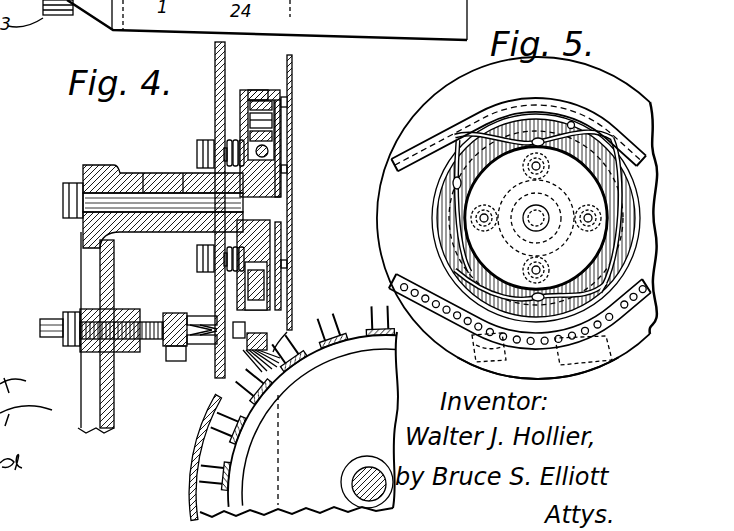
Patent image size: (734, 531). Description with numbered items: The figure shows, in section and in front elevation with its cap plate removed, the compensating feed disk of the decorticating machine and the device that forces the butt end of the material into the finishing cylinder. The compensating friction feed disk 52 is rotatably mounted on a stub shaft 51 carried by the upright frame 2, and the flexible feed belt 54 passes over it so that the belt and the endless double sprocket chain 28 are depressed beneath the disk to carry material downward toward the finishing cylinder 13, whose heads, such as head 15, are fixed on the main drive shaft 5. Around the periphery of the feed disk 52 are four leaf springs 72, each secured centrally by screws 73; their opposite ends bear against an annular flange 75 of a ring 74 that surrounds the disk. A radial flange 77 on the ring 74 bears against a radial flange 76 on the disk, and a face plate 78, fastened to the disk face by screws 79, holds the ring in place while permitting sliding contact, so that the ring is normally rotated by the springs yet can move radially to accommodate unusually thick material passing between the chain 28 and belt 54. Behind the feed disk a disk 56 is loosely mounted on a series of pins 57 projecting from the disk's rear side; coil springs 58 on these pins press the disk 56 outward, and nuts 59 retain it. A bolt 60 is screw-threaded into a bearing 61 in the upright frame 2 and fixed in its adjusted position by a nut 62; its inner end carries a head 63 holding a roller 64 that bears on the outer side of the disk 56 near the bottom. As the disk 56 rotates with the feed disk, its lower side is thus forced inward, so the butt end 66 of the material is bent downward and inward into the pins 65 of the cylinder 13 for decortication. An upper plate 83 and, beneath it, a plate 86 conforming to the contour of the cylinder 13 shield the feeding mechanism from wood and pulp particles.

In FIG. 4, the upright frame 2 is at (88, 262).
In FIG. 4, the main drive shaft 5 is at (370, 466).
In FIG. 4, the finishing cylinder 13 is at (328, 360).
In FIG. 4, the head 15 is at (332, 426).
In FIG. 4, the endless double sprocket chain 28 is at (287, 332).
In FIG. 5, the endless double sprocket chain 28 is at (503, 368).
In FIG. 4, the stub shaft 51 is at (250, 207).
In FIG. 5, the stub shaft 51 is at (539, 214).
In FIG. 4, the compensating friction feed disk 52 is at (275, 156).
In FIG. 5, the compensating friction feed disk 52 is at (536, 218).
In FIG. 4, the feed belt 54 is at (258, 90).
In FIG. 5, the feed belt 54 is at (433, 142).
In FIG. 4, the disk 56 is at (222, 72).
In FIG. 5, the disk 56 is at (517, 218).
In FIG. 4, the pins 57 is at (197, 152).
In FIG. 4, the coil springs 58 is at (232, 138).
In FIG. 4, the nuts 59 is at (207, 140).
In FIG. 4, the bolt 60 is at (60, 325).
In FIG. 4, the bearing 61 is at (148, 352).
In FIG. 4, the nut 62 is at (72, 346).
In FIG. 4, the head 63 is at (186, 361).
In FIG. 4, the roller 64 is at (190, 328).
In FIG. 5, the roller 64 is at (558, 359).
In FIG. 4, the pins 65 is at (328, 312).
In FIG. 4, the butt end 66 is at (240, 366).
In FIG. 4, the leaf springs 72 is at (283, 138).
In FIG. 5, the leaf springs 72 is at (457, 184).
In FIG. 4, the screws 73 is at (289, 267).
In FIG. 5, the screws 73 is at (541, 139).
In FIG. 4, the ring 74 is at (283, 102).
In FIG. 4, the annular flange 75 is at (292, 85).
In FIG. 5, the annular flange 75 is at (434, 218).
In FIG. 4, the radial flange 76 is at (273, 124).
In FIG. 5, the radial flange 76 is at (536, 218).
In FIG. 4, the radial flange 77 is at (273, 110).
In FIG. 5, the radial flange 77 is at (575, 126).
In FIG. 4, the face plate 78 is at (277, 90).
In FIG. 4, the screws 79 is at (283, 153).
In FIG. 4, the upper plate 83 is at (287, 170).
In FIG. 4, the plate 86 is at (193, 476).